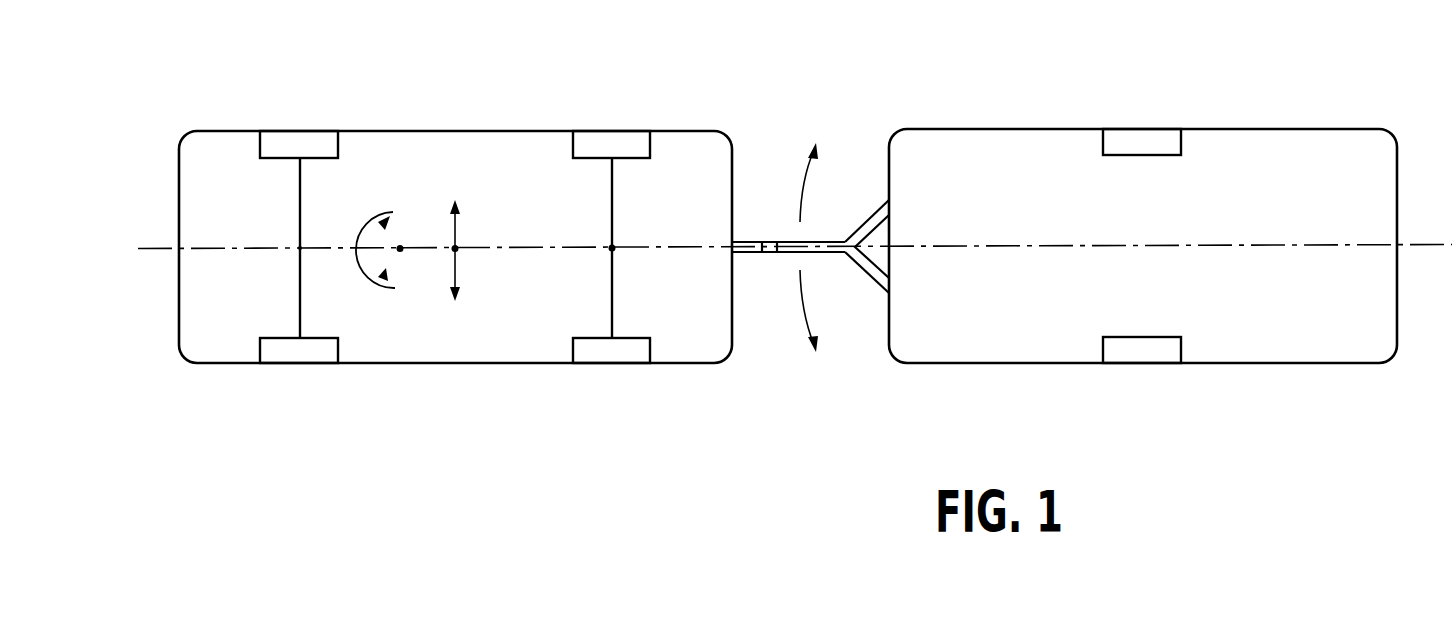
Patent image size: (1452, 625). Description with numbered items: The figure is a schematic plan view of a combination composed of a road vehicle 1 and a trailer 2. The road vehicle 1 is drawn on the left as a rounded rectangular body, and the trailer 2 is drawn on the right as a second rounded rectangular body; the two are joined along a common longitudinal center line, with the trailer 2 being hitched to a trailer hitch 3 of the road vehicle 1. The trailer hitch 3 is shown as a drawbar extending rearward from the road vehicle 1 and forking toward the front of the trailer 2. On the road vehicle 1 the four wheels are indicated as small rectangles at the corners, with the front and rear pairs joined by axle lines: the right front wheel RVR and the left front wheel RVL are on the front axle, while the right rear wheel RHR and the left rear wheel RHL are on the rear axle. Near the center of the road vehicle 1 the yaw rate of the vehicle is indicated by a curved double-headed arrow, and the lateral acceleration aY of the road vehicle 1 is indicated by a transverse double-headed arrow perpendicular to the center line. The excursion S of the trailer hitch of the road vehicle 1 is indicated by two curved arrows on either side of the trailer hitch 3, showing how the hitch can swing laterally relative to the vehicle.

The road vehicle 1 is at (462, 131).
The trailer 2 is at (1027, 129).
The trailer hitch 3 is at (771, 240).
The right front wheel RVR is at (300, 147).
The left front wheel RVL is at (300, 350).
The right rear wheel RHR is at (610, 147).
The left rear wheel RHL is at (612, 348).
The lateral acceleration aY is at (477, 231).
The excursion of the trailer hitch S is at (825, 242).